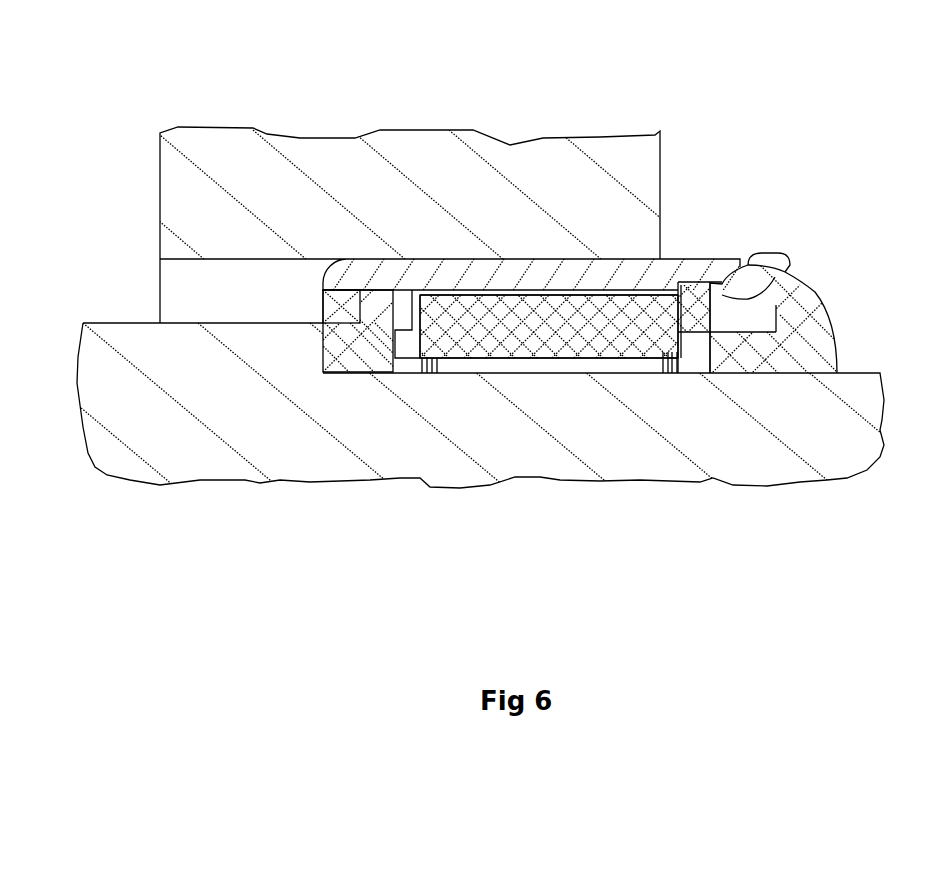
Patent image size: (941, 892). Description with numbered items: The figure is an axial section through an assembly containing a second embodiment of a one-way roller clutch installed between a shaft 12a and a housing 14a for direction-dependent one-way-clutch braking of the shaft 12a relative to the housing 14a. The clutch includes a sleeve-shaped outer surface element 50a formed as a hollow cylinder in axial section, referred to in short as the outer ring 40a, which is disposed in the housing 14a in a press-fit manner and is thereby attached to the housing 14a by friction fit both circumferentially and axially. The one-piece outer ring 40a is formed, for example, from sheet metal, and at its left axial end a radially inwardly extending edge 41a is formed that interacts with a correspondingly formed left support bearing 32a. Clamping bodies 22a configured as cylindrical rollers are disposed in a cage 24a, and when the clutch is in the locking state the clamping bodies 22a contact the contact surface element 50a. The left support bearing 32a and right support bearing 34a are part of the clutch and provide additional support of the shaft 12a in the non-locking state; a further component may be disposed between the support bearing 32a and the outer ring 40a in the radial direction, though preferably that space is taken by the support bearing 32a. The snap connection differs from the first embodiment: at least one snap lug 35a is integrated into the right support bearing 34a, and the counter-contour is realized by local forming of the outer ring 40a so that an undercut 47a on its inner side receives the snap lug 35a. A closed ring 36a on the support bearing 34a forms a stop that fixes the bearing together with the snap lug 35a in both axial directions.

The shaft 12a is at (210, 380).
The housing 14a is at (263, 195).
The clamping bodies 22a is at (528, 365).
The cage 24a is at (600, 355).
The left support bearing 32a is at (358, 350).
The right support bearing 34a is at (812, 320).
The snap lug 35a is at (750, 287).
The closed ring 36a is at (763, 265).
The outer ring 40a is at (410, 280).
The sleeve-shaped outer surface element 50a is at (410, 280).
The radially inwardly extending edge 41a is at (327, 292).
The undercut 47a is at (748, 266).